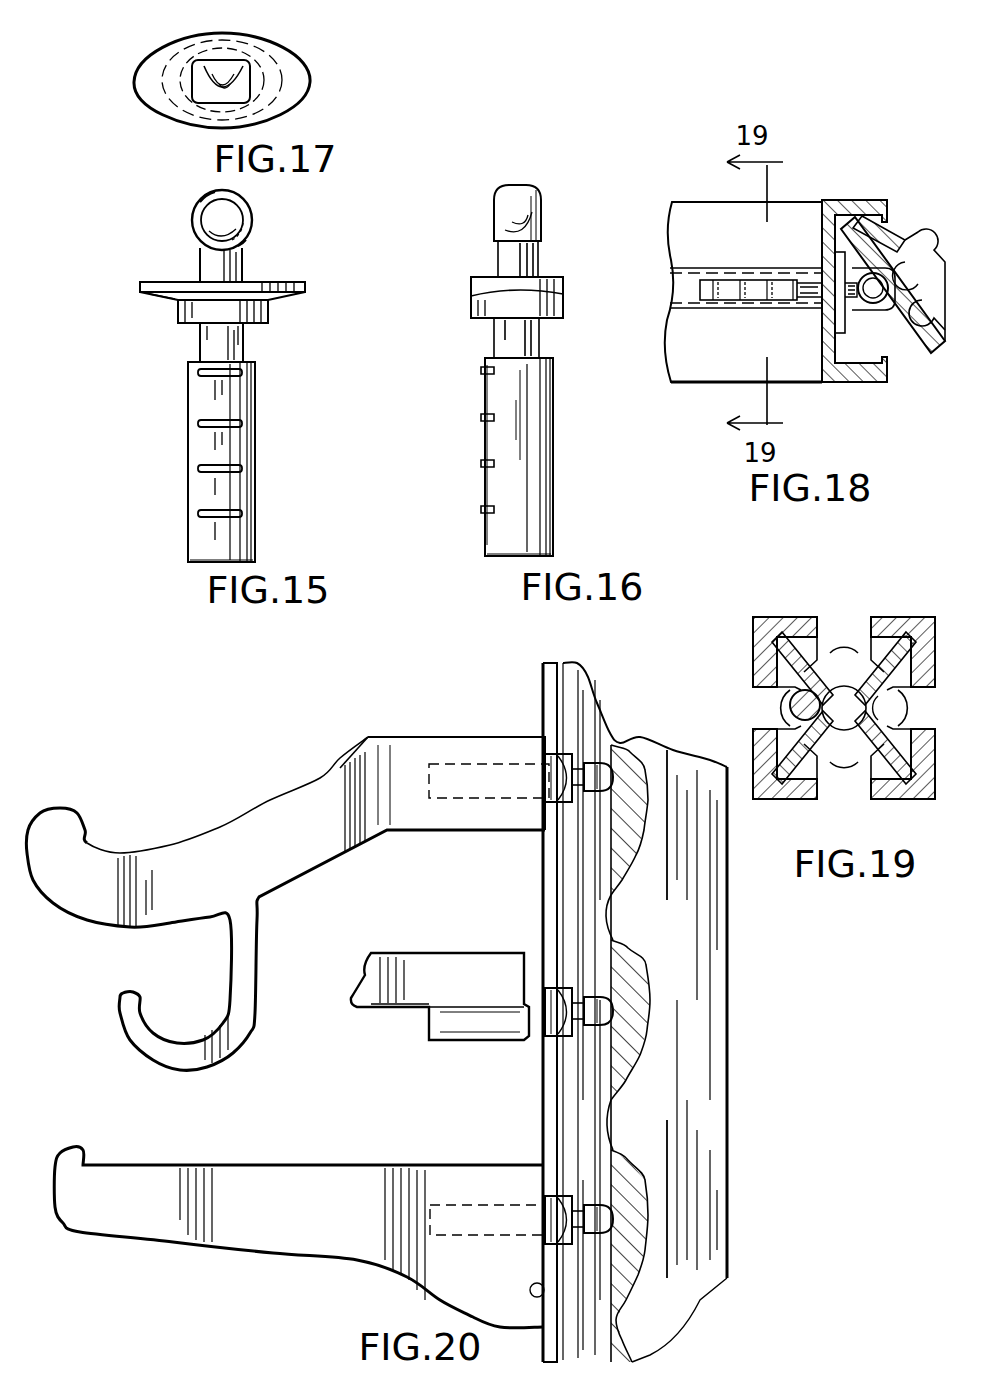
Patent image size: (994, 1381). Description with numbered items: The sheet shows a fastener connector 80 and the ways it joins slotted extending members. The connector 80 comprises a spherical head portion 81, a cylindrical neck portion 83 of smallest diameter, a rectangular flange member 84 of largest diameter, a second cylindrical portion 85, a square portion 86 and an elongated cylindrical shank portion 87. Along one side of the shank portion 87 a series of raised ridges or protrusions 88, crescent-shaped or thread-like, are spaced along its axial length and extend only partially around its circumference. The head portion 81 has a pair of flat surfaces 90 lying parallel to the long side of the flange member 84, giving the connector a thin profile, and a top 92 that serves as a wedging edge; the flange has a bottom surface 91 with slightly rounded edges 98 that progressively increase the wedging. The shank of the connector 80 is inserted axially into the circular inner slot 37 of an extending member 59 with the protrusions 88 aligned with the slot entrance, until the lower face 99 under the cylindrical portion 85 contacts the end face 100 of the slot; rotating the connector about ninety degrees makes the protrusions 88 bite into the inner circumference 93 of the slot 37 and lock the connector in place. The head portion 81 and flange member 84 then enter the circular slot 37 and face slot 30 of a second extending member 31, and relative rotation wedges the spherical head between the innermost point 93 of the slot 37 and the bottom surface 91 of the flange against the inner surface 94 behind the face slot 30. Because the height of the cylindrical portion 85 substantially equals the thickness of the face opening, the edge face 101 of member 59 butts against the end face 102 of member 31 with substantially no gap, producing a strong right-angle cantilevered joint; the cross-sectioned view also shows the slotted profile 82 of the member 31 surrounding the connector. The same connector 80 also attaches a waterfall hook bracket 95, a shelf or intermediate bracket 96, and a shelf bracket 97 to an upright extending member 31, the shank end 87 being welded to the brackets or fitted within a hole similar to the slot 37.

In FIG. 19, the face slot 30 is at (843, 620).
In FIG. 18, the extending member 31 is at (872, 286).
In FIG. 19, the extending member 31 is at (818, 687).
In FIG. 20, the extending member 31 is at (750, 1045).
In FIG. 19, the inner circular slot 37 is at (843, 748).
In FIG. 18, the extending member 59 is at (707, 202).
In FIG. 15, the connector 80 is at (222, 364).
In FIG. 16, the connector 80 is at (521, 329).
In FIG. 18, the connector 80 is at (725, 322).
In FIG. 19, the connector 80 is at (787, 703).
In FIG. 20, the connector 80 is at (602, 760).
In FIG. 15, the head portion 81 is at (253, 222).
In FIG. 18, the extrusion 82 is at (907, 335).
In FIG. 15, the cylindrical neck portion 83 is at (200, 277).
In FIG. 17, the flange member 84 is at (308, 86).
In FIG. 15, the flange member 84 is at (305, 286).
In FIG. 15, the second cylindrical portion 85 is at (267, 310).
In FIG. 15, the square portion 86 is at (207, 343).
In FIG. 16, the square portion 86 is at (541, 350).
In FIG. 17, the cylindrical shank portion 87 is at (222, 52).
In FIG. 15, the cylindrical shank portion 87 is at (188, 536).
In FIG. 16, the cylindrical shank portion 87 is at (553, 481).
In FIG. 15, the raised ridges or protrusions 88 is at (207, 512).
In FIG. 16, the raised ridges or protrusions 88 is at (481, 463).
In FIG. 19, the raised ridges or protrusions 88 is at (837, 683).
In FIG. 17, the flat surfaces 90 is at (228, 62).
In FIG. 15, the flat surfaces 90 is at (218, 224).
In FIG. 16, the flat surfaces 90 is at (495, 215).
In FIG. 15, the bottom surface of flange 91 is at (167, 303).
In FIG. 17, the top of head portion 92 is at (188, 77).
In FIG. 15, the top of head portion 92 is at (207, 200).
In FIG. 19, the inner circumference of circular slot 93 is at (873, 693).
In FIG. 19, the inner surface of face slot 94 is at (777, 693).
In FIG. 20, the waterfall bracket 95 is at (278, 800).
In FIG. 20, the support bracket 96 is at (395, 1010).
In FIG. 20, the shelf bracket 97 is at (273, 1257).
In FIG. 15, the rounded edges 98 is at (140, 303).
In FIG. 16, the rounded edges 98 is at (563, 302).
In FIG. 15, the lower face of neck portion 99 is at (253, 324).
In FIG. 18, the end face of slot 100 is at (840, 382).
In FIG. 19, the end face of slot 100 is at (880, 779).
In FIG. 18, the edge face of member 101 is at (830, 382).
In FIG. 18, the end face of member 102 is at (813, 200).